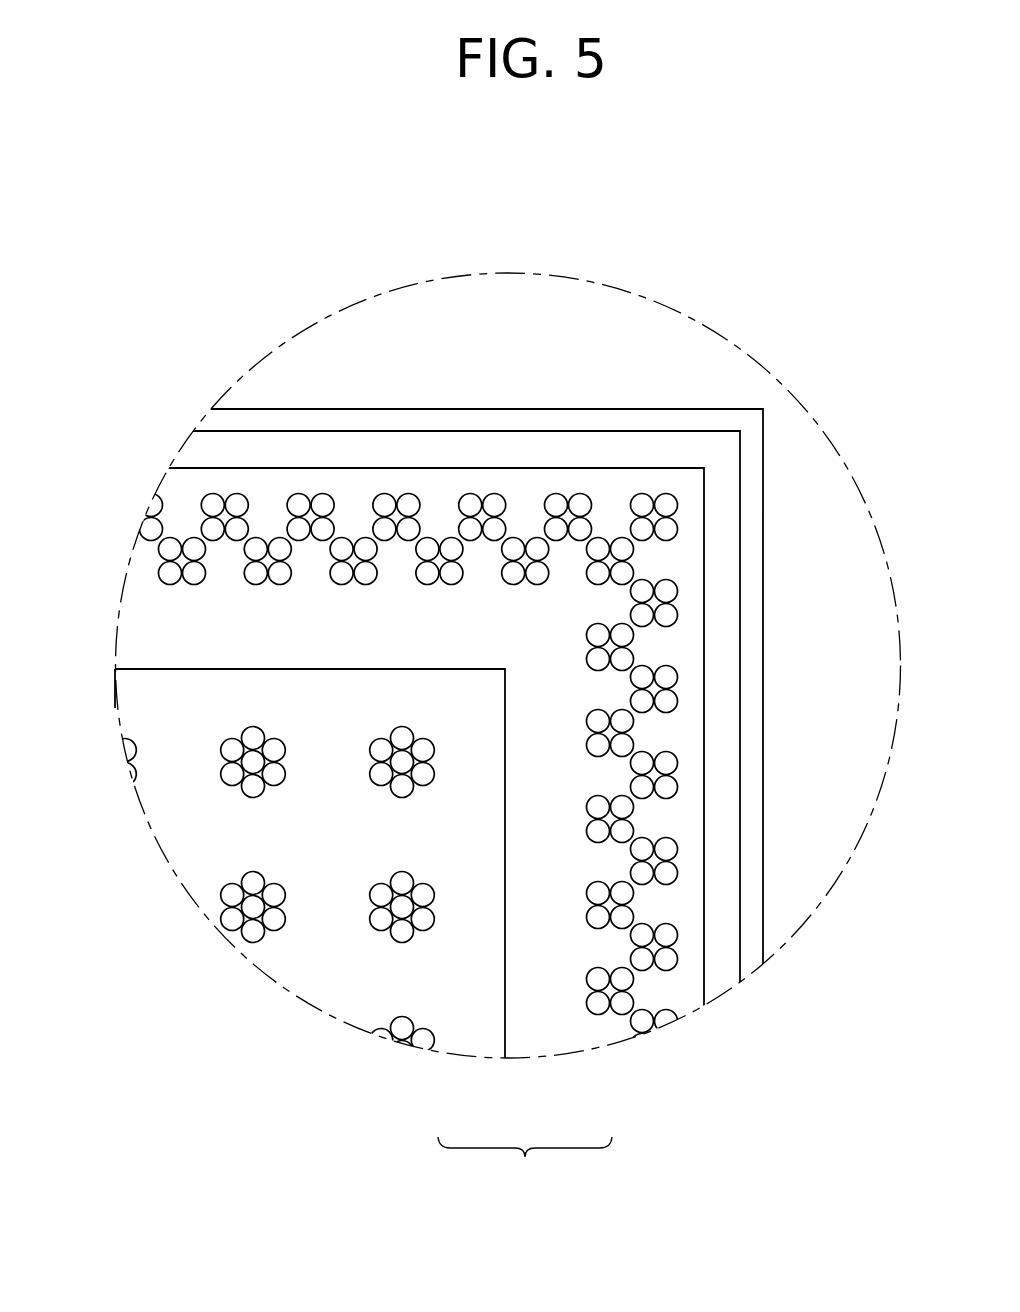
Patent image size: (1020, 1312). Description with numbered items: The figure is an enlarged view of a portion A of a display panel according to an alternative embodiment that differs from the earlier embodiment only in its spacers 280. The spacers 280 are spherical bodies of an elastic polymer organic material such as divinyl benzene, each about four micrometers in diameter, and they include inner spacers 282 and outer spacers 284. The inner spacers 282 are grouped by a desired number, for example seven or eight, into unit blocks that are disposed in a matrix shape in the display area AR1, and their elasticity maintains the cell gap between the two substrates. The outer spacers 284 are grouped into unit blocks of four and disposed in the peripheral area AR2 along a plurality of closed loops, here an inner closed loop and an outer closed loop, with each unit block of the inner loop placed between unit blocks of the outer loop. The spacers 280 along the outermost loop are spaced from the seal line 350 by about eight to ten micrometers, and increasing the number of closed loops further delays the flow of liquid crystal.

The portion A is at (710, 330).
The seal line 350 is at (720, 647).
The display area AR1 is at (274, 909).
The peripheral area AR2 is at (360, 822).
The spacers 280 is at (525, 1163).
The inner spacers 282 is at (423, 920).
The outer spacers 284 is at (598, 1005).